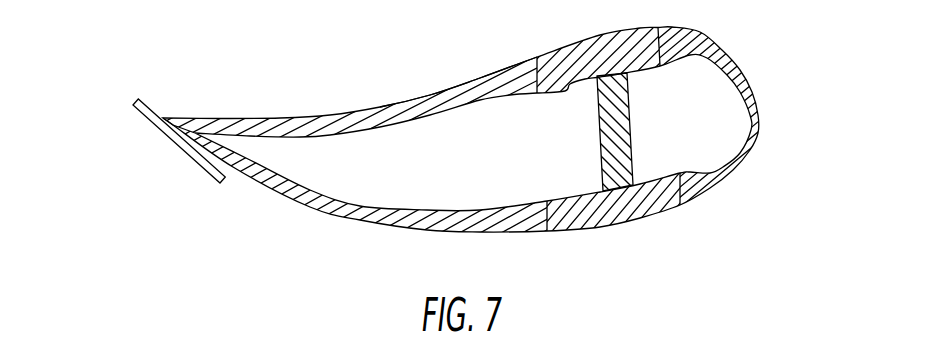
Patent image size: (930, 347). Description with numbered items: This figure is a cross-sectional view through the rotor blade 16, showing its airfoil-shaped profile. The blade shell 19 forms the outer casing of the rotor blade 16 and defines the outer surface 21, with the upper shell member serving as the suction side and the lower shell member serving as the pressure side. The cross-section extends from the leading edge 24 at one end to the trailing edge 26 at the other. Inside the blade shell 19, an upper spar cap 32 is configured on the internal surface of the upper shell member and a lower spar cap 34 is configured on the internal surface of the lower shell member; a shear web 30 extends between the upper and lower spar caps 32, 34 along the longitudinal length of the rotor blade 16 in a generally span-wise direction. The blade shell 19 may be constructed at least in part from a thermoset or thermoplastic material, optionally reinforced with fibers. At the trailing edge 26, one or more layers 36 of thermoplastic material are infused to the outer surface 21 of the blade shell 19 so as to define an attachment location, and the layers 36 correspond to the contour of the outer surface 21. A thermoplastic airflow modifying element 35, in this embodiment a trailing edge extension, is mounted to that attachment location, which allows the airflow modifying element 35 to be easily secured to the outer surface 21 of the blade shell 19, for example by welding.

The rotor blade 16 is at (306, 48).
The blade shell 19 is at (416, 97).
The outer surface 21 is at (482, 80).
The leading edge 24 is at (760, 107).
The trailing edge 26 is at (182, 120).
The shear web 30 is at (630, 128).
The upper spar cap 32 is at (567, 90).
The lower spar cap 34 is at (573, 200).
The airflow modifying element 35 is at (134, 121).
The layer of thermoplastic material 36 is at (225, 173).